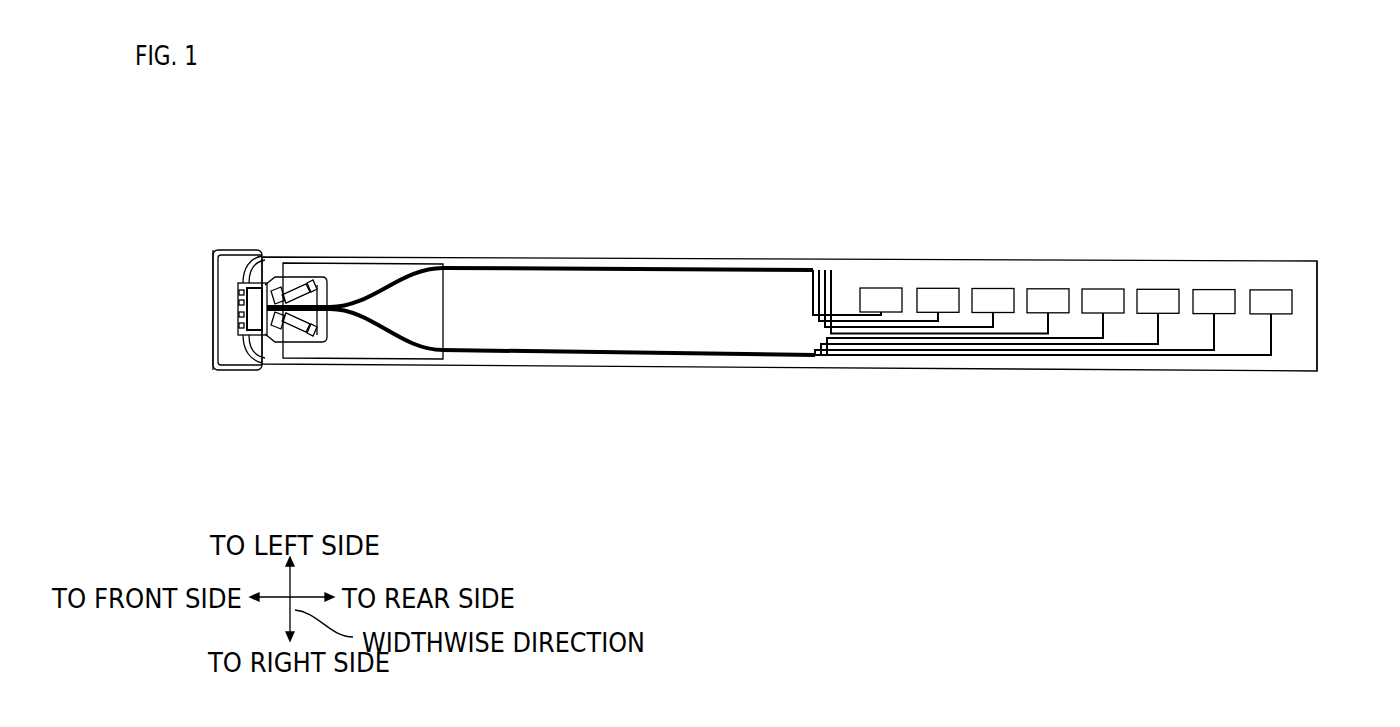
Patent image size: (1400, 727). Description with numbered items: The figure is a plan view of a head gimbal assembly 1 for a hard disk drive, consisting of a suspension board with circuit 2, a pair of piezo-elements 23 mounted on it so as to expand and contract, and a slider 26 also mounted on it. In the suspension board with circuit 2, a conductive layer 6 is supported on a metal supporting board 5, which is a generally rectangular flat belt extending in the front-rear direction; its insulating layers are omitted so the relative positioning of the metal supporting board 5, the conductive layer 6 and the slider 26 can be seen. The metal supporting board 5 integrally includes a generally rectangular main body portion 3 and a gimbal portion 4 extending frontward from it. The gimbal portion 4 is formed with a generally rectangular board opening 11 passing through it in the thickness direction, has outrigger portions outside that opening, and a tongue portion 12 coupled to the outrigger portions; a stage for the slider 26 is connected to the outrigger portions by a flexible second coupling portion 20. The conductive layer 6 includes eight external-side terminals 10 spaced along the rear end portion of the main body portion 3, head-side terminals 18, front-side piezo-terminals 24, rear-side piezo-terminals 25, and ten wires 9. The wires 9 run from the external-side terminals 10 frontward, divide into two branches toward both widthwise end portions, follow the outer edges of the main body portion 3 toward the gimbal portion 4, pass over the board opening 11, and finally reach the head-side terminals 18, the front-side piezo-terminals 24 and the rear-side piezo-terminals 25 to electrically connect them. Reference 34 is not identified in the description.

The head gimbal assembly 1 is at (746, 586).
The suspension board with circuit 2 is at (732, 258).
The main body portion 3 is at (853, 430).
The gimbal portion 4 is at (268, 425).
The metal supporting board 5 is at (1318, 321).
The conductive layer 6 is at (709, 232).
The wires 9 is at (1243, 355).
The external-side terminals 10 is at (1271, 290).
The board opening 11 is at (392, 359).
The tongue portion 12 is at (243, 283).
The head-side terminals 18 is at (240, 325).
The second coupling portion 20 is at (215, 363).
The piezo-elements 23 is at (292, 290).
The front-side piezo-terminals 24 is at (277, 288).
The rear-side piezo-terminals 25 is at (314, 290).
The slider 26 is at (263, 257).
The support frame 34 is at (326, 278).